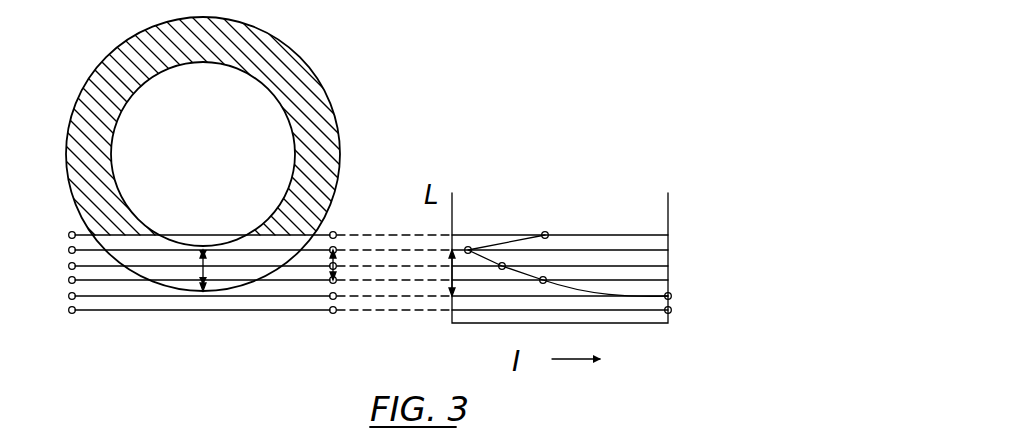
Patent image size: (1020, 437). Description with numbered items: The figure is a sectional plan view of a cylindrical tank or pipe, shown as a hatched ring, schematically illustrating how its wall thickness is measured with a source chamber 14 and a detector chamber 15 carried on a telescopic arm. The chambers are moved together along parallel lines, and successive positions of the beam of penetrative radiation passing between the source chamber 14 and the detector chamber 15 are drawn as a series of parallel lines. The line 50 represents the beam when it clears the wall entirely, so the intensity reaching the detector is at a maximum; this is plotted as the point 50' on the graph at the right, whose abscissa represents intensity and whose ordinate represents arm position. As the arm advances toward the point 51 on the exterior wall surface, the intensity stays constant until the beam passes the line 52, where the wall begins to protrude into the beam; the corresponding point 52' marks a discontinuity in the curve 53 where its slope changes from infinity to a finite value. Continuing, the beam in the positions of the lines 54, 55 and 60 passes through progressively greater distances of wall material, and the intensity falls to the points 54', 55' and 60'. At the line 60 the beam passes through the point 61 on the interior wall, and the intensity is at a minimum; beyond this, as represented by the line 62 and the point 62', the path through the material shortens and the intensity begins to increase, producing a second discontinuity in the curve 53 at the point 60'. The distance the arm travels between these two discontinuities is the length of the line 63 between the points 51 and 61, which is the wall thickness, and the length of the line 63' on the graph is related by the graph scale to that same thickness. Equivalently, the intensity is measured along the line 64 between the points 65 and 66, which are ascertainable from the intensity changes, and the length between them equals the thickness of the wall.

The source chamber 14 is at (72, 232).
The detector chamber 15 is at (334, 232).
The line representing the beam of penetrative radiation 50 is at (175, 326).
The point on the exterior wall surface 51 is at (203, 296).
The line 52 is at (175, 308).
The curve 53 is at (650, 294).
The line 54 is at (175, 290).
The line 55 is at (175, 268).
The line 60 is at (175, 249).
The point on the interior wall 61 is at (204, 250).
The line 62 is at (175, 231).
The line between points 51 and 61 63 is at (183, 243).
The line 64 is at (346, 278).
The point 65 is at (336, 246).
The point 66 is at (327, 309).
The point 50' is at (689, 316).
The point 52' is at (689, 288).
The point 54' is at (533, 296).
The point 55' is at (528, 259).
The point 60' is at (486, 225).
The point 62' is at (561, 217).
The line 63' is at (436, 292).